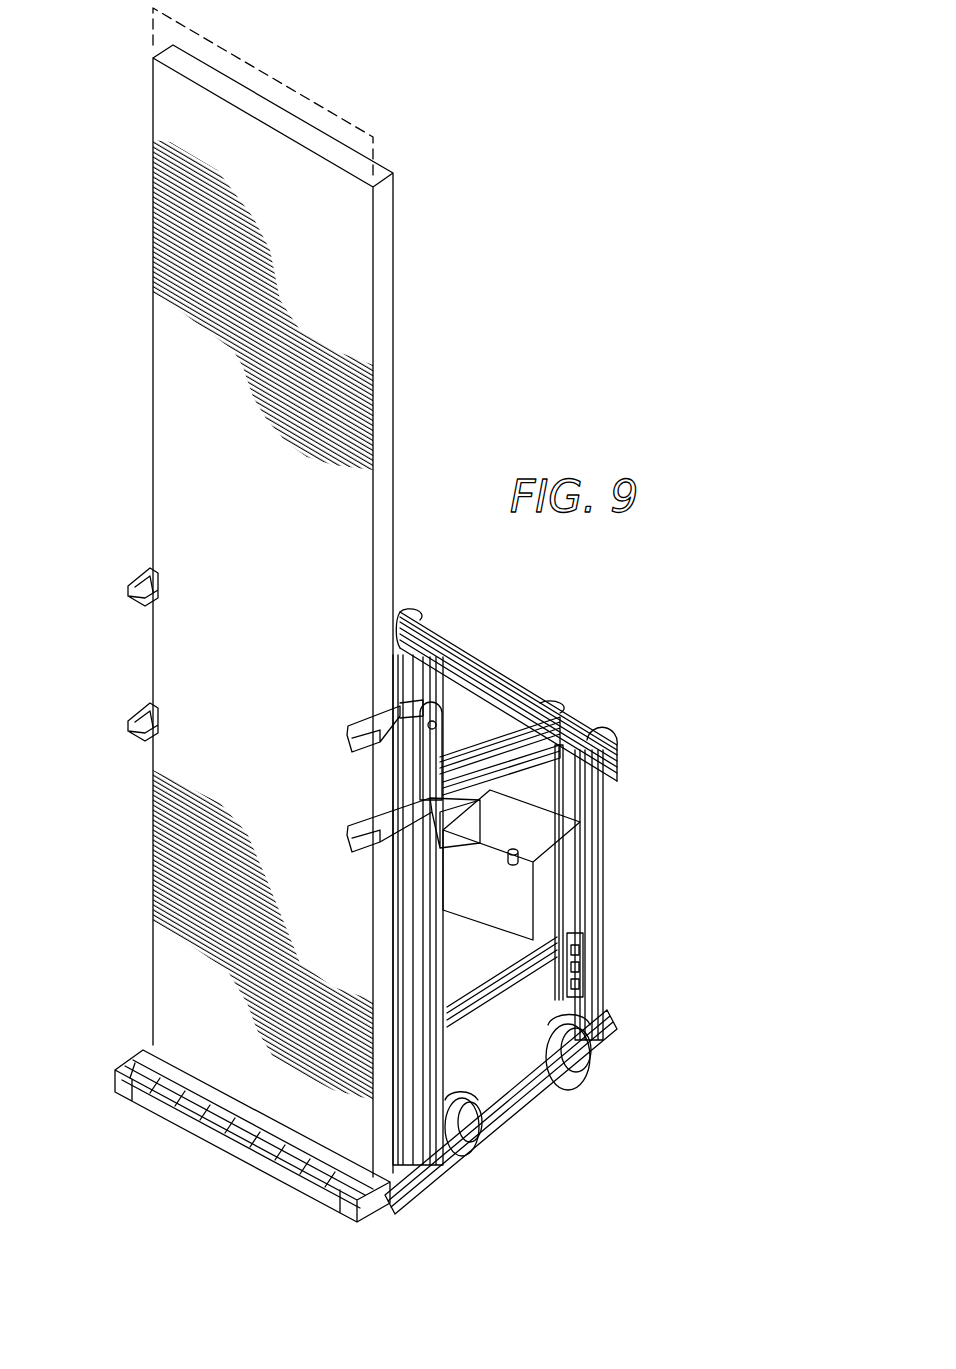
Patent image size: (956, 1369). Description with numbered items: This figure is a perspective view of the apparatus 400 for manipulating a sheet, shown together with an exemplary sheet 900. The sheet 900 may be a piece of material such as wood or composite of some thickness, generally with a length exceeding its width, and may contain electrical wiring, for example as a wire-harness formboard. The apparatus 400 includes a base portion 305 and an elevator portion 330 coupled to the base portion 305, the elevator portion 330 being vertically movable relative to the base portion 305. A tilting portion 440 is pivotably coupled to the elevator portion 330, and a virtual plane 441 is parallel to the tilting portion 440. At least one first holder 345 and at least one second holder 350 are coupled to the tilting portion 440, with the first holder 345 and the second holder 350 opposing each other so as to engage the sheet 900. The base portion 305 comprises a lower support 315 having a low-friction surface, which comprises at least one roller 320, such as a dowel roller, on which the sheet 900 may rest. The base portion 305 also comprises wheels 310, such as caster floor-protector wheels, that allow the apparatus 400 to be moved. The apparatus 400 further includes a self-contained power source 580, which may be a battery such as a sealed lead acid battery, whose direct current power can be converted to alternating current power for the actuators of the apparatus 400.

The sheet 900 is at (185, 398).
The virtual plane 441 is at (335, 113).
The first holder 345 is at (128, 590).
The second holder 350 is at (347, 732).
The tilting portion 440 is at (413, 652).
The elevator portion 330 is at (563, 845).
The base portion 305 is at (592, 815).
The self-contained power source 580 is at (502, 920).
The wheels 310 is at (587, 1063).
The lower support 315 is at (142, 1063).
The roller 320 is at (293, 1143).
The apparatus 400 is at (375, 933).